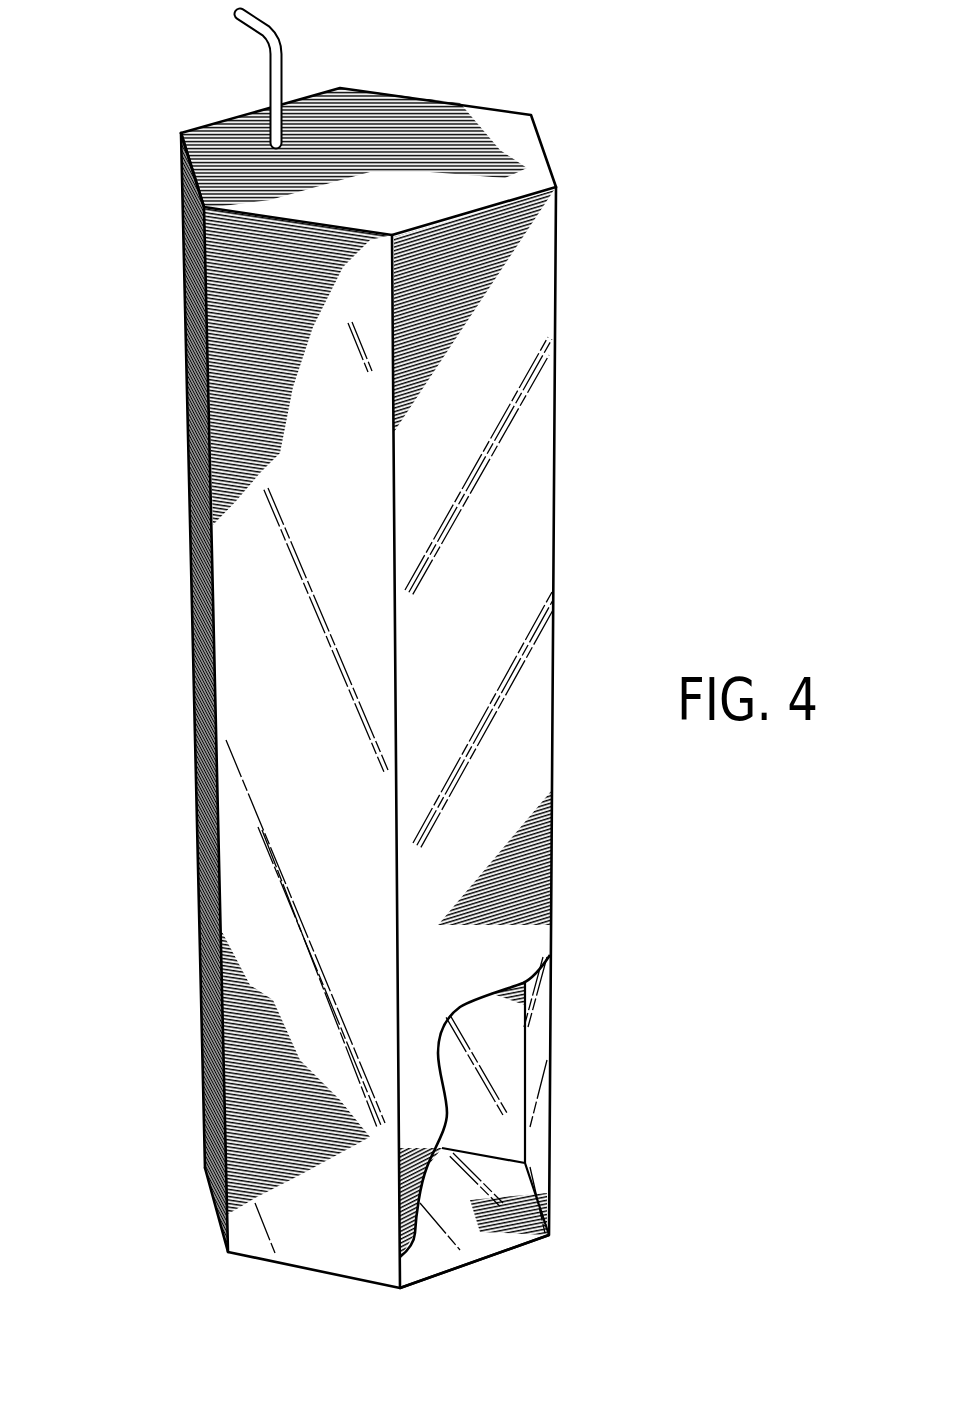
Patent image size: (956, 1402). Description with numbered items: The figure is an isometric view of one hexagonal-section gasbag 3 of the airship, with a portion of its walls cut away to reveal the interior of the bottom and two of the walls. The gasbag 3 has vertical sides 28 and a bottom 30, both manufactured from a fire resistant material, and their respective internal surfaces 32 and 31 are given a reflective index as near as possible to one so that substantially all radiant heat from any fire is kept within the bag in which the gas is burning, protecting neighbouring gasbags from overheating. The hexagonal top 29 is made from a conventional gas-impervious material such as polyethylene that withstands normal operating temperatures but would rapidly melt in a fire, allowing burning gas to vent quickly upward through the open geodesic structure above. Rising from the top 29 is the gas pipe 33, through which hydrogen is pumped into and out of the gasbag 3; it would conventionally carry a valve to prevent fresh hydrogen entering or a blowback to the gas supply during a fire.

The gasbag 3 is at (528, 312).
The vertical sides 28 is at (528, 462).
The hexagonal top 29 is at (507, 133).
The bottom 30 is at (440, 1255).
The internal surface of bottom 31 is at (462, 1207).
The internal surfaces of vertical sides 32 is at (497, 1040).
The gas pipe 33 is at (275, 63).